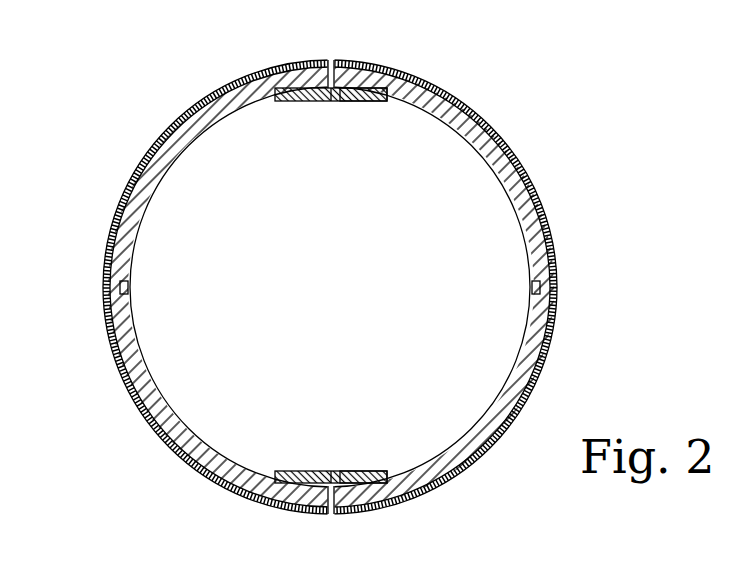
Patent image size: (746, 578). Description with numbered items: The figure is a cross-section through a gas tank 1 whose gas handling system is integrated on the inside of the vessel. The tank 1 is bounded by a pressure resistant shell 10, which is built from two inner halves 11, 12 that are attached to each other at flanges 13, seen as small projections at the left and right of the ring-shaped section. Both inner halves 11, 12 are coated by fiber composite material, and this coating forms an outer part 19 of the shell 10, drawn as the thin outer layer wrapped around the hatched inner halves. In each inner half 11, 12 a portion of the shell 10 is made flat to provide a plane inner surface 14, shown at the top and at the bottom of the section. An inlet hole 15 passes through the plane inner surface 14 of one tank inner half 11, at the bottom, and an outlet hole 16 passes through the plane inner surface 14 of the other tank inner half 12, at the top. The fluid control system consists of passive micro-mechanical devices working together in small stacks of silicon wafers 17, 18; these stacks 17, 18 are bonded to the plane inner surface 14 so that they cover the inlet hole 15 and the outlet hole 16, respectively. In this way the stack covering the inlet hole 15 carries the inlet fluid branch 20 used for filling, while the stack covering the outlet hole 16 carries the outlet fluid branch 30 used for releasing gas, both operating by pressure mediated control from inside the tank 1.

The tank 1 is at (371, 291).
The pressure resistant shell 10 is at (366, 287).
The inner half 11 is at (552, 236).
The inner half 12 is at (540, 385).
The flanges 13 is at (120, 288).
The plane inner surface 14 is at (370, 101).
The inlet hole 15 is at (338, 510).
The outlet hole 16 is at (340, 60).
The stack of silicon wafers 17 is at (285, 471).
The stack of silicon wafers 18 is at (290, 101).
The outer part 19 is at (470, 97).
The inlet fluid branch 20 is at (330, 471).
The outlet fluid branch 30 is at (333, 101).